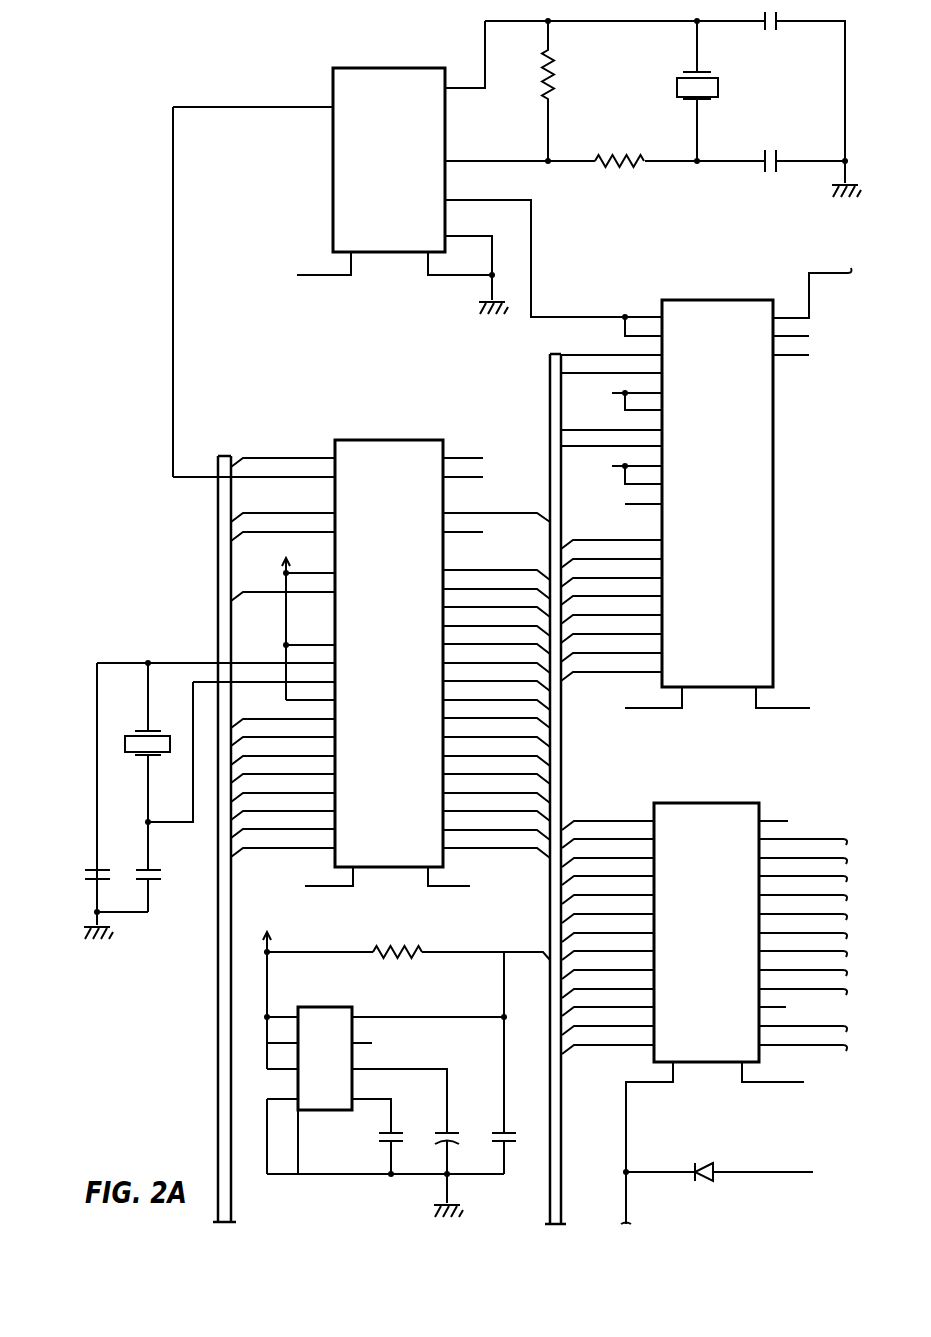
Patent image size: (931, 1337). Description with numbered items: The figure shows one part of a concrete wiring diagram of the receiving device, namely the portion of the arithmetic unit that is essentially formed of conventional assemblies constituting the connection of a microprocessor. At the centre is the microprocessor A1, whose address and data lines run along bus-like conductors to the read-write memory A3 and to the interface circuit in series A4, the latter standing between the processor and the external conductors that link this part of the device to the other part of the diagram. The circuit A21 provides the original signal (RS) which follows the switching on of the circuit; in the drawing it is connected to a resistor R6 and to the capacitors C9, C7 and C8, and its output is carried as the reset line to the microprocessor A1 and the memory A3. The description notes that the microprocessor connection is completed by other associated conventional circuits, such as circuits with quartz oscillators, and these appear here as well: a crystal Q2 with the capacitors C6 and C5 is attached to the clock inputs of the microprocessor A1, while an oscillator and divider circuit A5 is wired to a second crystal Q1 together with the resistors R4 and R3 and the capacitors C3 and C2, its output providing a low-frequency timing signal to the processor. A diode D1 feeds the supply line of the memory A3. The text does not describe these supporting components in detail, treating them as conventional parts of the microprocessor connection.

The 4060 oscillator/divider IC A5 is at (417, 249).
The resistor R4 is at (561, 91).
The resistor R3 is at (619, 172).
The crystal Q1 is at (699, 91).
The capacitor C3 is at (772, 33).
The capacitor C2 is at (772, 170).
The interface circuit in series A4 is at (708, 493).
The microprocessor A1 is at (323, 667).
The 8MHz crystal Q2 is at (136, 766).
The capacitor C6 is at (104, 881).
The capacitor C5 is at (154, 881).
The circuit providing the original signal A21 is at (400, 1063).
The resistor R6 is at (397, 963).
The capacitor C9 is at (397, 1144).
The capacitor C7 is at (453, 1144).
The capacitor C8 is at (510, 1144).
The read-write memory A3 is at (704, 1013).
The diode D1 is at (737, 1184).